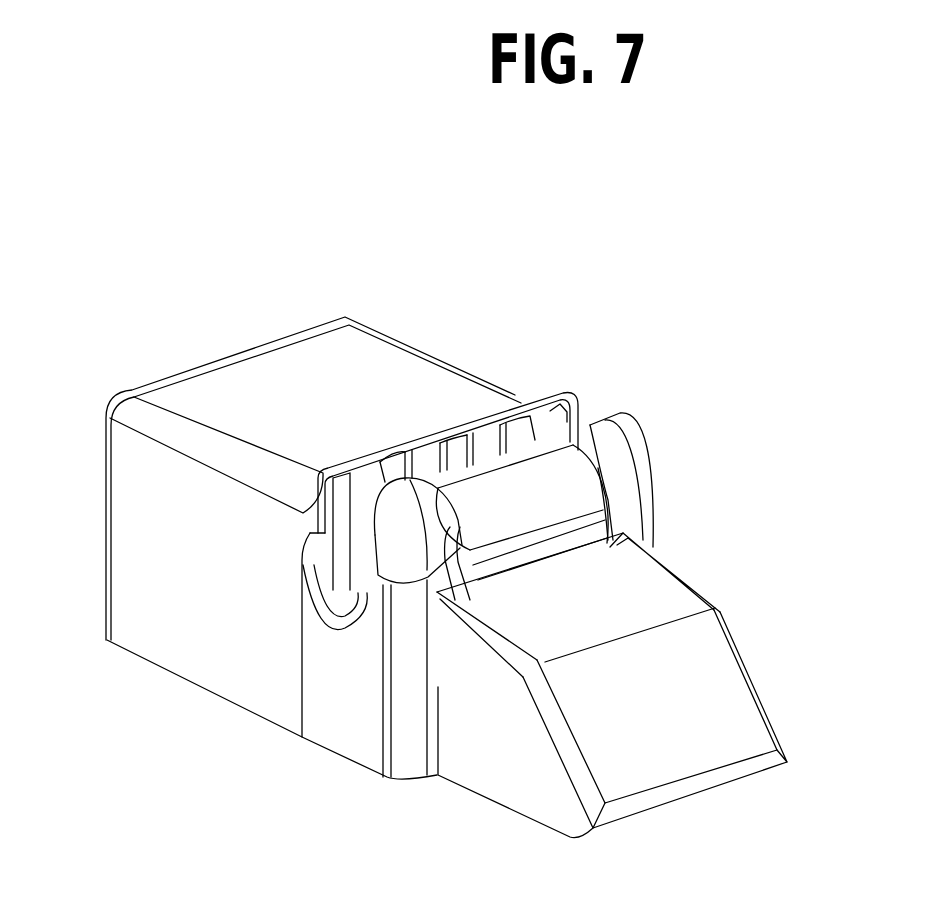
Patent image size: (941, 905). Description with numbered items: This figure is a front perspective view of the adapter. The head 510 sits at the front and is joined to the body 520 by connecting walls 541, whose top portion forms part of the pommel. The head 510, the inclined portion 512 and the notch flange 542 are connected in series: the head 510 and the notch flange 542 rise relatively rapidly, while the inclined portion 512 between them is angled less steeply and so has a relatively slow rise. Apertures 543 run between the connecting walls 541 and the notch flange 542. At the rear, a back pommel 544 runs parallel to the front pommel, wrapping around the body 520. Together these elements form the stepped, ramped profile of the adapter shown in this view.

The head 510 is at (705, 737).
The inclined portion 512 is at (610, 602).
The body 520 is at (330, 375).
The connecting walls 541 is at (635, 495).
The notch flange 542 is at (588, 412).
The apertures 543 is at (597, 468).
The back pommel 544 is at (532, 407).